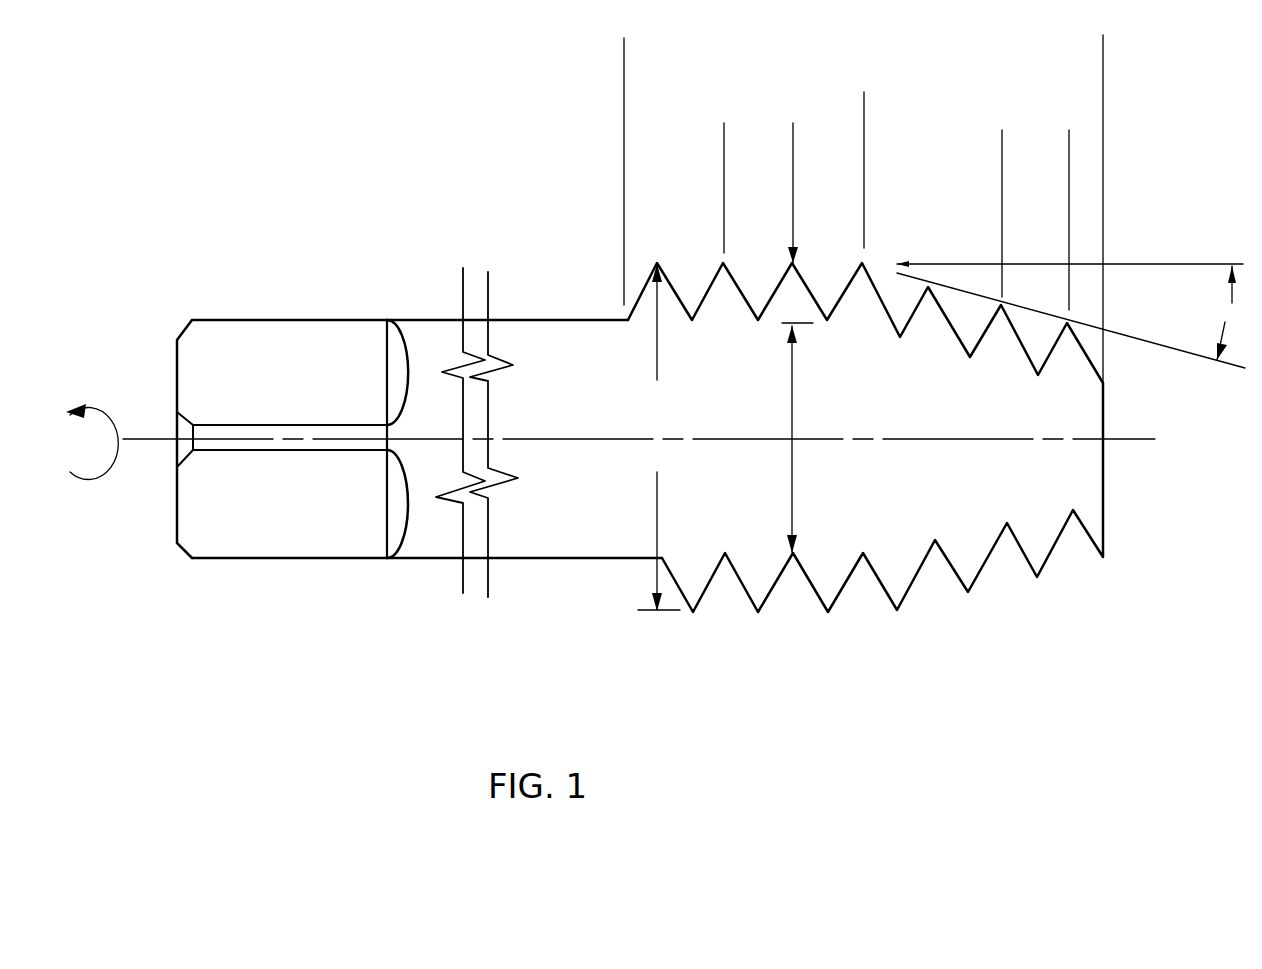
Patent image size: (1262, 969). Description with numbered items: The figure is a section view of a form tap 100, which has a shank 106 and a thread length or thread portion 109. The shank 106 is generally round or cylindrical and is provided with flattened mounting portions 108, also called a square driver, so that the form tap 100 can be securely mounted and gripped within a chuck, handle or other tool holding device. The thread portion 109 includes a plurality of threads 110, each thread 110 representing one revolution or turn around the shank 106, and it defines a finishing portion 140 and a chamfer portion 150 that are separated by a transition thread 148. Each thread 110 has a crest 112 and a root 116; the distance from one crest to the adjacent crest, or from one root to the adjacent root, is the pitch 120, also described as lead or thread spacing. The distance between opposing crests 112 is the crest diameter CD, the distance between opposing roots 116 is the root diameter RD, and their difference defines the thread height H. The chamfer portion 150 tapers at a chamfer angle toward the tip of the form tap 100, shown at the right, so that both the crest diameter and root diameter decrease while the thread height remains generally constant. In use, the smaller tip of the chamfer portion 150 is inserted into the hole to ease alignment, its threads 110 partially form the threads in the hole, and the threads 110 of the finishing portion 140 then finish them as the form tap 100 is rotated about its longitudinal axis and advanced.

The form tap 100 is at (312, 222).
The mounting portion 108 is at (292, 439).
The shank 106 is at (578, 537).
The thread 110 is at (743, 565).
The crest 112 is at (962, 600).
The root 116 is at (1072, 512).
The transition thread 148 is at (858, 308).
The thread portion 109 is at (1104, 52).
The finishing portion 140 is at (864, 101).
The chamfer portion 150 is at (1104, 101).
The pitch 120 is at (1123, 147).